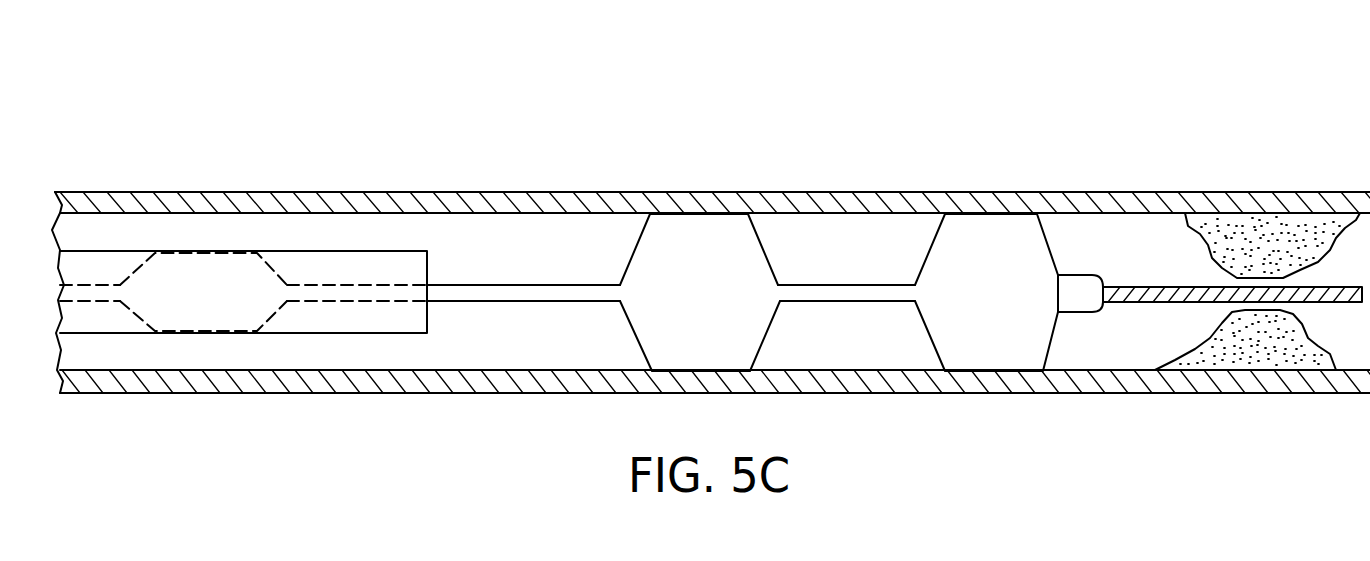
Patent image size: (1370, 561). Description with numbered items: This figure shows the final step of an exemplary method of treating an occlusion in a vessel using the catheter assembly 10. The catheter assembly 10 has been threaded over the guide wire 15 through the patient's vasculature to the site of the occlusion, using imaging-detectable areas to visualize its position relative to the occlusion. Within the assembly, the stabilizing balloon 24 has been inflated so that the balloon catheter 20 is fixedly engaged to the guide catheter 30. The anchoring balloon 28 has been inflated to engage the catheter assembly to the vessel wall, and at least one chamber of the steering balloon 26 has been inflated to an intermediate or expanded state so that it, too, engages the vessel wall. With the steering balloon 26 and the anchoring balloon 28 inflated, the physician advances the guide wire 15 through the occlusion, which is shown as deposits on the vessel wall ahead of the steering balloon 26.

The catheter assembly 10 is at (893, 128).
The guide wire 15 is at (1138, 303).
The balloon catheter 20 is at (522, 289).
The stabilizing balloon 24 is at (196, 318).
The steering balloon 26 is at (990, 230).
The anchoring balloon 28 is at (708, 228).
The guide catheter 30 is at (203, 250).